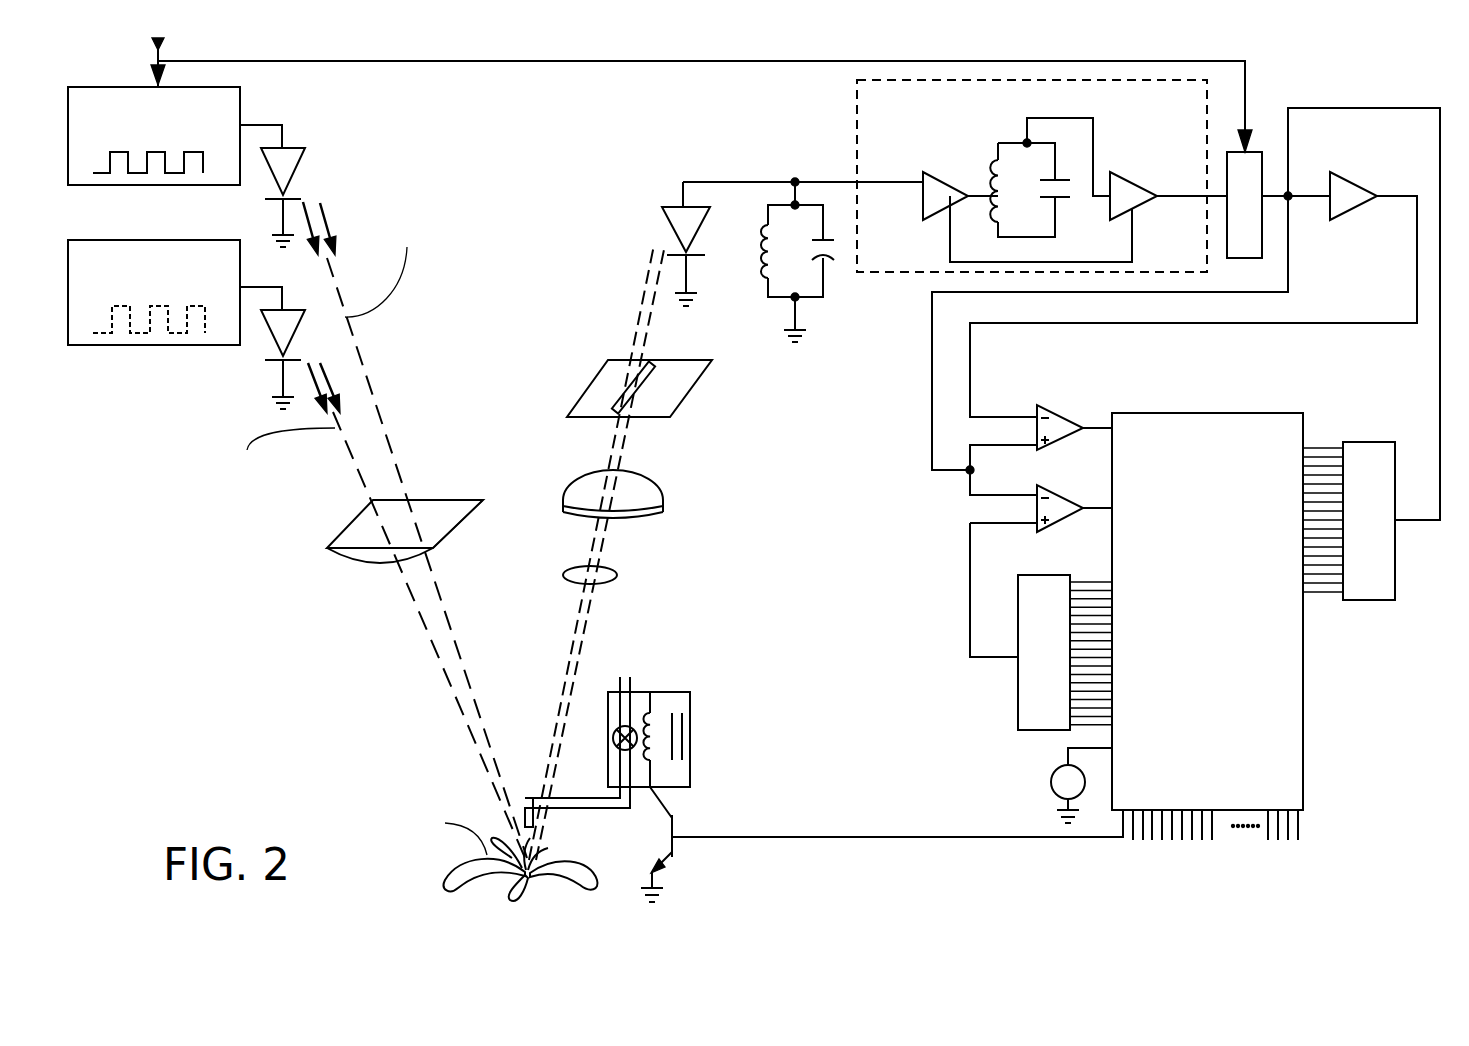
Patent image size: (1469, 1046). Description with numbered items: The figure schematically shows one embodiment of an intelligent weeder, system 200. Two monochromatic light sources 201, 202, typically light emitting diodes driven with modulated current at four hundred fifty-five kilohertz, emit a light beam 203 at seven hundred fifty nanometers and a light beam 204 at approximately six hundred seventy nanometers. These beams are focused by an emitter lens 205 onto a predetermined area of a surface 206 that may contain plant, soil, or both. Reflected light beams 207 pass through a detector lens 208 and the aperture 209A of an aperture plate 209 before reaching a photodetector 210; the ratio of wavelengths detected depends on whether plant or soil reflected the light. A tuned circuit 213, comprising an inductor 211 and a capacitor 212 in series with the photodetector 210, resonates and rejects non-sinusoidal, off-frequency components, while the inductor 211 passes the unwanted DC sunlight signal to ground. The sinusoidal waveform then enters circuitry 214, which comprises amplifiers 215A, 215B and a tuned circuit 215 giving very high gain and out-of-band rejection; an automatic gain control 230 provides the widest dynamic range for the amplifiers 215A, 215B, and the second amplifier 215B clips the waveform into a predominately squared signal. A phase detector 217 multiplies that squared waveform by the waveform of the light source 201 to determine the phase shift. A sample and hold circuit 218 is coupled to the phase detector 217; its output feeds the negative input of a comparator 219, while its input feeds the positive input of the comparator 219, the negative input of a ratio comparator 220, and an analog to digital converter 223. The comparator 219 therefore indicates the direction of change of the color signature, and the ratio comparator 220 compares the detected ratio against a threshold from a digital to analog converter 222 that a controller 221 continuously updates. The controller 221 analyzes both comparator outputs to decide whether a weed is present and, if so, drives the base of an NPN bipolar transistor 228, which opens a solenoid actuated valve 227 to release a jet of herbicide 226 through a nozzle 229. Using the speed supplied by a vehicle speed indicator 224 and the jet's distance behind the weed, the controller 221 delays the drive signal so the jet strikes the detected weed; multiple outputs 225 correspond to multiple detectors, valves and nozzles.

The weeder system 200 is at (237, 717).
The monochromatic light source 201 is at (240, 110).
The monochromatic light source 202 is at (175, 240).
The light beam 203 is at (380, 420).
The light beam 204 is at (360, 482).
The emitter lens 205 is at (457, 530).
The surface 206 is at (540, 856).
The reflected light beams 207 is at (617, 578).
The detector lens 208 is at (660, 488).
The aperture plate 209 is at (697, 388).
The aperture 209A is at (627, 387).
The photodetector 210 is at (683, 205).
The inductor 211 is at (768, 258).
The capacitor 212 is at (838, 285).
The tuned circuit 213 is at (791, 285).
The circuitry 214 is at (1016, 176).
The tuned circuit 215 is at (1012, 237).
The amplifier 215A is at (948, 177).
The amplifier 215B is at (1123, 212).
The phase detector 217 is at (1245, 125).
The sample and hold circuit 218 is at (1353, 175).
The comparator 219 is at (1048, 405).
The ratio comparator 220 is at (1057, 530).
The controller 221 is at (1218, 572).
The digital to analog converter 222 is at (1062, 617).
The analog to digital converter 223 is at (1387, 509).
The vehicle speed indicator 224 is at (1058, 798).
The multiple outputs 225 is at (1225, 864).
The herbicide 226 is at (628, 719).
The solenoid actuated valve 227 is at (711, 739).
The NPN bipolar transistor 228 is at (882, 843).
The nozzle 229 is at (533, 800).
The automatic gain control 230 is at (1132, 210).